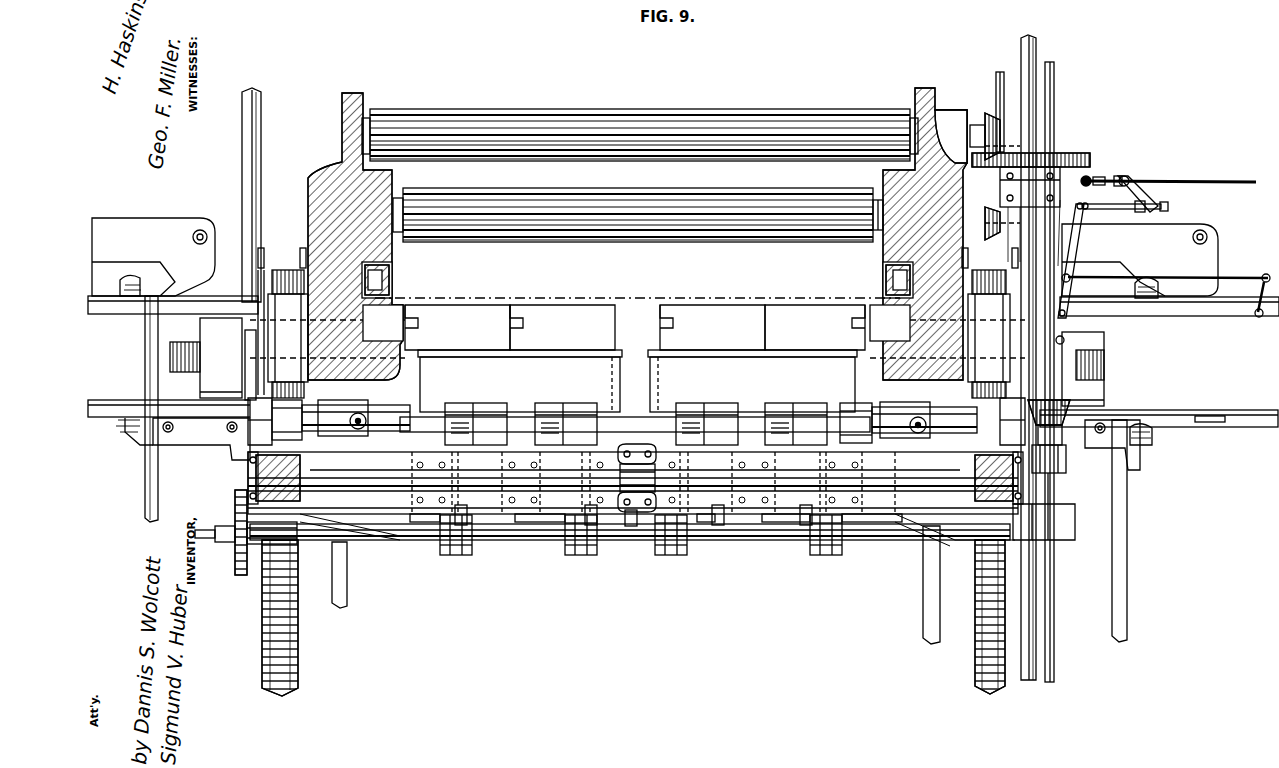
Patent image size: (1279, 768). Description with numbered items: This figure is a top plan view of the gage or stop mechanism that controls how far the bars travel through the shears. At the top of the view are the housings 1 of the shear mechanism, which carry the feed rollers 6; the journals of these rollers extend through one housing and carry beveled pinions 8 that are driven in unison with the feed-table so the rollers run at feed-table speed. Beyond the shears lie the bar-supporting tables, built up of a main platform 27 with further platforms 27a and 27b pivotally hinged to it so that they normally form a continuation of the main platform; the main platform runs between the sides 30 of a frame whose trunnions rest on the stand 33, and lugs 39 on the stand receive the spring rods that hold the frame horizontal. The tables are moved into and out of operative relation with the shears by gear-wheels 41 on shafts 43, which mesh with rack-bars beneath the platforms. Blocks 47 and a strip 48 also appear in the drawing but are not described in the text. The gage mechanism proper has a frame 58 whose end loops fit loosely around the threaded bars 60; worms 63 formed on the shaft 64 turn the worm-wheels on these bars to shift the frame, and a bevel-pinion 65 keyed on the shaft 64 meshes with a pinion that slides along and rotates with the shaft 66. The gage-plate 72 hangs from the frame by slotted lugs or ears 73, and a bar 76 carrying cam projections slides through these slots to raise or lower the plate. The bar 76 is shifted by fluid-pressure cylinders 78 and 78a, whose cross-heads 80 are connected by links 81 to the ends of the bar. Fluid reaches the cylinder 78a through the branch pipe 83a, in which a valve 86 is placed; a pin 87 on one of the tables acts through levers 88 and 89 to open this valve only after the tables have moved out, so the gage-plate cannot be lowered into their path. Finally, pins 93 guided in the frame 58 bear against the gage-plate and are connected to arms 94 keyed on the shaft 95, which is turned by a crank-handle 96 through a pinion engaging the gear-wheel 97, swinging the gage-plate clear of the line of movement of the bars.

The housings 1 is at (318, 222).
The rollers 6 is at (590, 158).
The beveled pinions 8 is at (990, 113).
The main platform 27 is at (1082, 392).
The platform 27a is at (635, 327).
The platform 27b is at (637, 327).
The sides of frame 30 is at (200, 292).
The stand 33 is at (145, 496).
The lugs 39 is at (140, 282).
The gear-wheels 41 is at (183, 342).
The shafts 43 is at (258, 162).
The block 47 is at (636, 323).
The strip 48 is at (246, 338).
The frame 58 is at (633, 483).
The threaded bars 60 is at (299, 630).
The worms 63 is at (302, 463).
The shaft 64 is at (388, 478).
The bevel-pinion 65 is at (1058, 490).
The shaft 66 is at (996, 80).
The gage-plate 72 is at (637, 381).
The lugs or ears 73 is at (636, 424).
The bar 76 is at (632, 417).
The fluid-pressure cylinder 78 is at (380, 405).
The fluid-pressure cylinder 78a is at (892, 410).
The cross-heads 80 is at (248, 428).
The links 81 is at (332, 402).
The branch pipe 83a is at (1208, 180).
The valve 86 is at (1125, 176).
The pin 87 is at (1065, 338).
The lever 88 is at (1074, 250).
The lever 89 is at (1148, 194).
The pins 93 is at (462, 512).
The arms 94 is at (452, 548).
The shaft 95 is at (532, 540).
The crank-handle 96 is at (208, 540).
The gear-wheel 97 is at (235, 497).